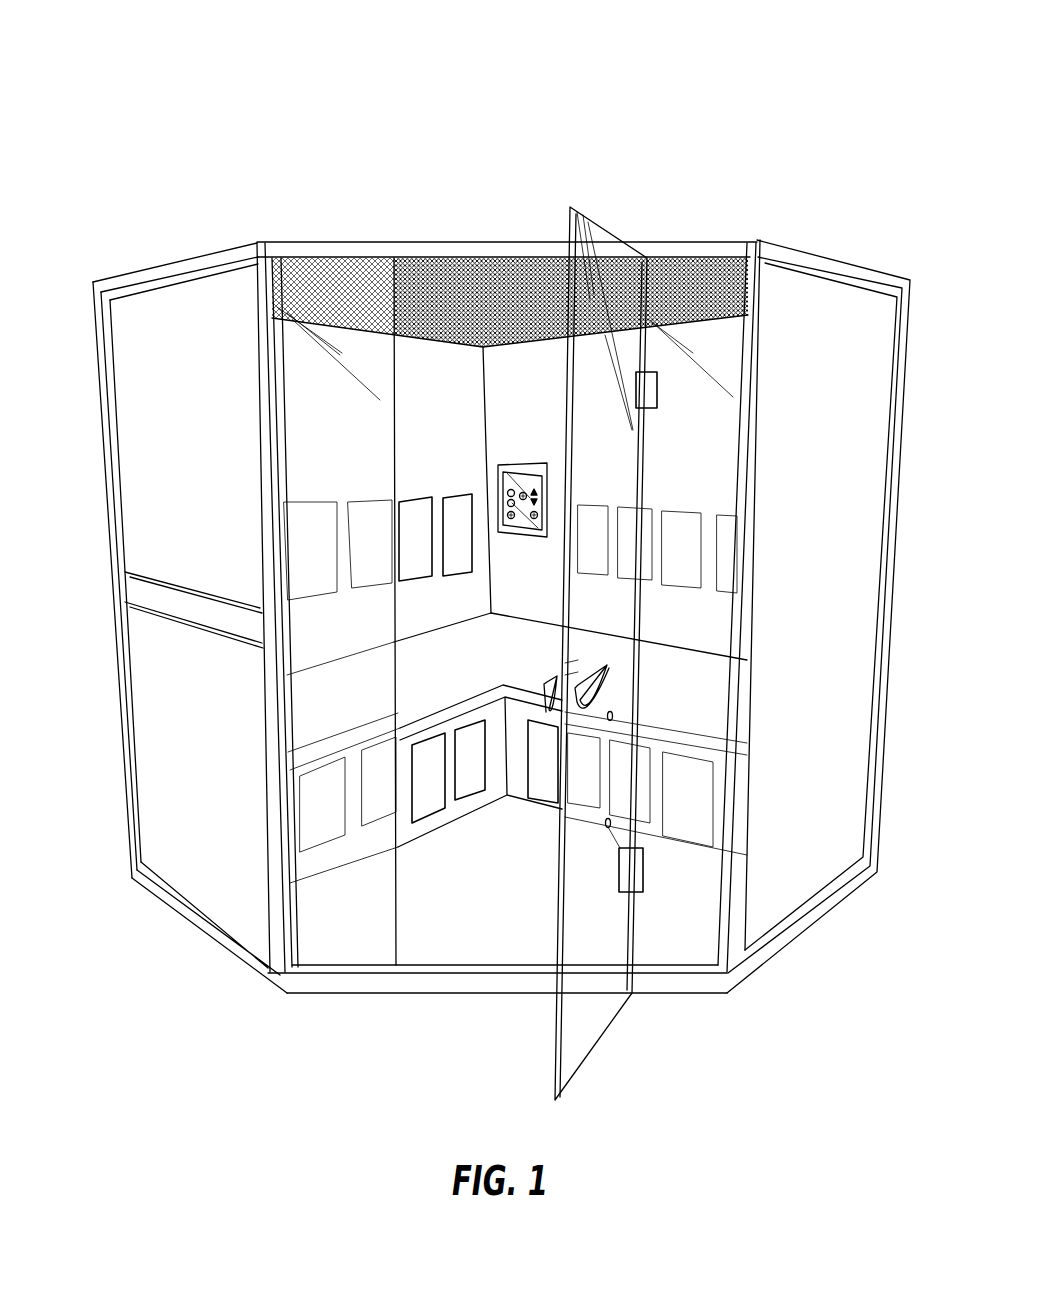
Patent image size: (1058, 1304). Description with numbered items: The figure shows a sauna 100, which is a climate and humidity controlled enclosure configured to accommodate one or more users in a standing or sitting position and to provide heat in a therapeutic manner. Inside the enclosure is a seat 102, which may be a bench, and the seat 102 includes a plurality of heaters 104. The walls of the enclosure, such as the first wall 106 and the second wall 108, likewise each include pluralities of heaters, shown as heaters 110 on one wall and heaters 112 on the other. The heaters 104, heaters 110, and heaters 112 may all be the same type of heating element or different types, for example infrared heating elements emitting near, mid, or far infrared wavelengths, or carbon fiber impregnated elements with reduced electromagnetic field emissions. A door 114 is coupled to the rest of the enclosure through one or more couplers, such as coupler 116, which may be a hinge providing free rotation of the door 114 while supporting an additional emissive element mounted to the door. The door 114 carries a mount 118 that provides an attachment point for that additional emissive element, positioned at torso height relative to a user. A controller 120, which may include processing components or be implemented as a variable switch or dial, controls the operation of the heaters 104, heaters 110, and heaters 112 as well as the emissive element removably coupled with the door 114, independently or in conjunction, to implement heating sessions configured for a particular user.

The sauna 100 is at (846, 105).
The seat 102 is at (367, 707).
The heaters 104 is at (545, 745).
The first wall 106 is at (463, 363).
The second wall 108 is at (535, 373).
The heaters 110 is at (455, 528).
The heaters 112 is at (595, 537).
The door 114 is at (577, 1008).
The coupler 116 is at (634, 880).
The mount 118 is at (631, 882).
The controller 120 is at (537, 473).